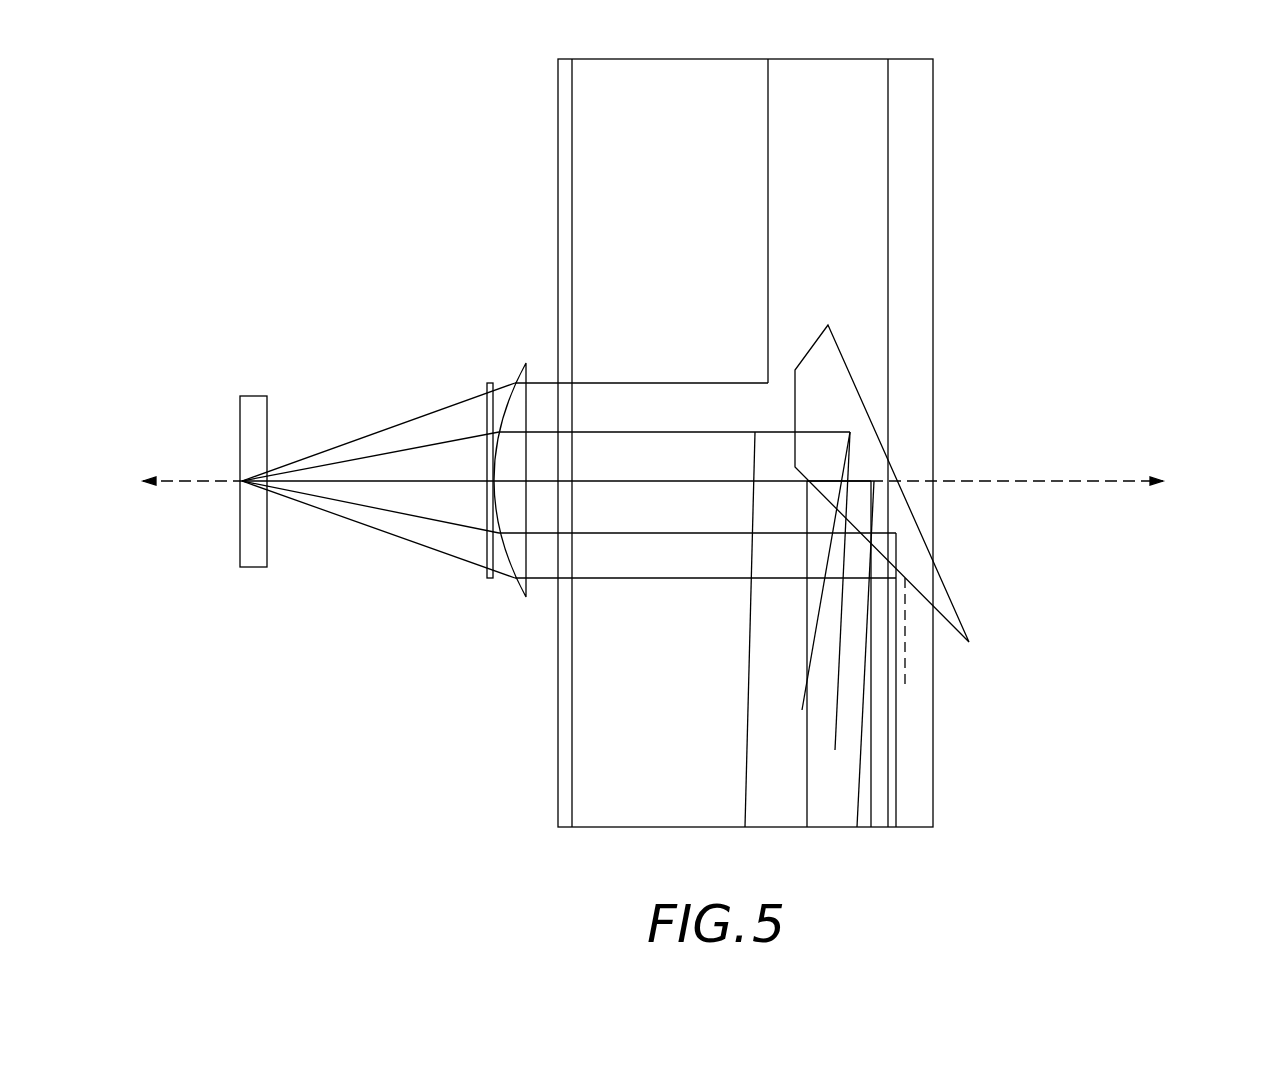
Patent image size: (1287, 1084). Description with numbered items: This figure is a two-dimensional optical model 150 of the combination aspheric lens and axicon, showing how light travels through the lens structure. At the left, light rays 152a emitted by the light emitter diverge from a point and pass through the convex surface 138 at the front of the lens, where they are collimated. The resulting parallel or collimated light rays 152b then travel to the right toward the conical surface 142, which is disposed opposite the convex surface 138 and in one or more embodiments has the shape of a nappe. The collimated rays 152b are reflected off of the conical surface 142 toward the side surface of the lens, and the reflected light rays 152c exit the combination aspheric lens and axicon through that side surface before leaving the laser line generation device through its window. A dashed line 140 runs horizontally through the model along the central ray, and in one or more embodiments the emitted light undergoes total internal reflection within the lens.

The optical model 150 is at (1122, 170).
The optical axis 140 is at (1032, 481).
The convex surface 138 is at (515, 587).
The light rays 152a is at (403, 424).
The parallel or collimated light rays 152b is at (617, 579).
The reflected light rays 152c is at (768, 220).
The conical surface 142 is at (945, 613).